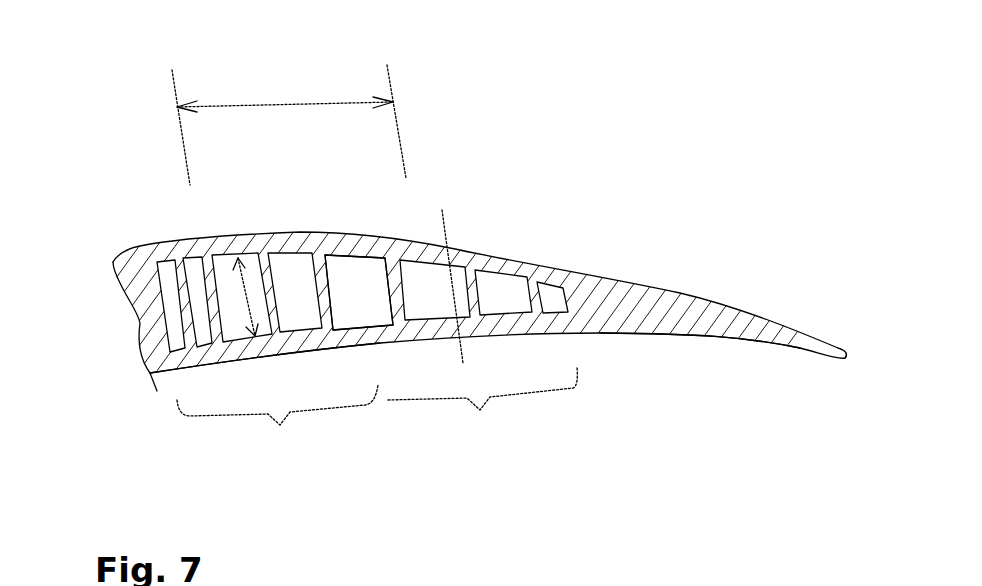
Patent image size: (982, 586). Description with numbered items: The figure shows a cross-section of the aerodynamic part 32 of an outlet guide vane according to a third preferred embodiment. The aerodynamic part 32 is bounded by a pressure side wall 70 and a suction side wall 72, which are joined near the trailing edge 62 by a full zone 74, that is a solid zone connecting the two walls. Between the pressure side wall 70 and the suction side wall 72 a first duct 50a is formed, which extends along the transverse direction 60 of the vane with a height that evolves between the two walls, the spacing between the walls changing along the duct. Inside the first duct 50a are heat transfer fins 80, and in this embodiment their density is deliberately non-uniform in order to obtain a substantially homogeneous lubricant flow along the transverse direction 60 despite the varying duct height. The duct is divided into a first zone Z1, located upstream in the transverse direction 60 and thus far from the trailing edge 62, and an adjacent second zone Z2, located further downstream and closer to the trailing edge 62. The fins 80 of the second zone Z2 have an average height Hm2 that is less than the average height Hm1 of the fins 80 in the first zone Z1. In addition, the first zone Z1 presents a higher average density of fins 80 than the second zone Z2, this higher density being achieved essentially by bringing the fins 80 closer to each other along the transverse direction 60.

The aerodynamic part 32 is at (724, 290).
The transverse direction 60 is at (273, 103).
The trailing edge 62 is at (832, 343).
The pressure side wall 70 is at (243, 350).
The suction side wall 72 is at (146, 295).
The full zone 74 is at (618, 313).
The heat transfer fins 80 is at (207, 278).
The first duct 50a is at (366, 302).
The average height of fins in first zone Hm1 is at (250, 292).
The average height of fins in second zone Hm2 is at (477, 292).
The first zone Z1 is at (277, 421).
The second zone Z2 is at (482, 409).